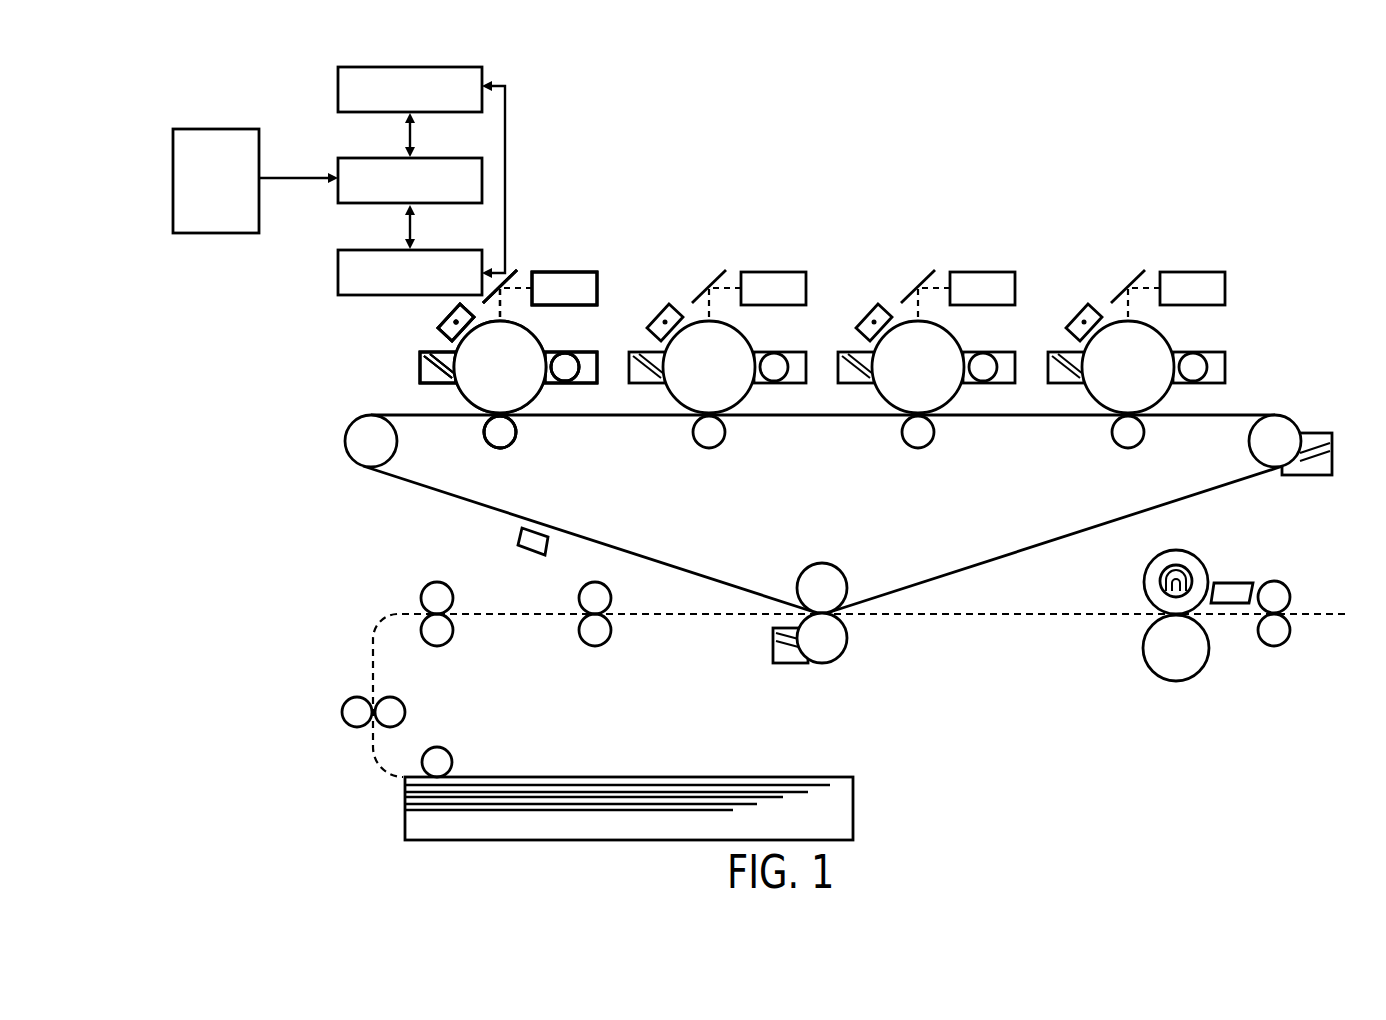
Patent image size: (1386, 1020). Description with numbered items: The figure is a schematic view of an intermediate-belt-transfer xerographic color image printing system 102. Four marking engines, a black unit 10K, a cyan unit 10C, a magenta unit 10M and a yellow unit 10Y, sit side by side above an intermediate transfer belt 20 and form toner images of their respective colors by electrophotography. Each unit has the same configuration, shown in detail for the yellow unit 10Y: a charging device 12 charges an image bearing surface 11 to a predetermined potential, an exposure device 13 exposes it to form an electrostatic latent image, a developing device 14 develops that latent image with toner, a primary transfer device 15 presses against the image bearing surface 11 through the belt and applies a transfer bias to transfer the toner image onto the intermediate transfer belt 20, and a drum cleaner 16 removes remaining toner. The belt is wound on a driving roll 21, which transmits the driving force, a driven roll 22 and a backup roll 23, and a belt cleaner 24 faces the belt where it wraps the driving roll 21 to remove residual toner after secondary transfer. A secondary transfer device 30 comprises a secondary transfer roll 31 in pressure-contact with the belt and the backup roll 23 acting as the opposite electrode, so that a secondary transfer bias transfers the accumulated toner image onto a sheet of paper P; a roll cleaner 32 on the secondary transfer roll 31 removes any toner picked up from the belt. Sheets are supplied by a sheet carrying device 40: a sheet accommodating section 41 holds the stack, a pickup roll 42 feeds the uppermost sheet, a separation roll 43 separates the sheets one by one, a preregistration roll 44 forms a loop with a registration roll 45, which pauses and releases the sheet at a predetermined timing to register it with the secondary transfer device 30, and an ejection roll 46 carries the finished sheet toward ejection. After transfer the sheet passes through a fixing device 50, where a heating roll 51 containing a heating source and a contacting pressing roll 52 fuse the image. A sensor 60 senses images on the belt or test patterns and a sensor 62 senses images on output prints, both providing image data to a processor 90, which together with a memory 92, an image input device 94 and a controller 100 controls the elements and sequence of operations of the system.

The black unit 10K is at (556, 244).
The cyan unit 10C is at (763, 244).
The magenta unit 10M is at (973, 244).
The yellow unit 10Y is at (1153, 343).
The image printing system 102 is at (922, 149).
The image bearing surface 11 is at (1170, 386).
The charging device 12 is at (1080, 304).
The exposure device 13 is at (1224, 290).
The developing device 14 is at (1224, 370).
The primary transfer device 15 is at (1128, 440).
The drum cleaner 16 is at (1062, 377).
The intermediate transfer belt 20 is at (402, 415).
The driving roll 21 is at (1262, 441).
The driven roll 22 is at (360, 438).
The backup roll 23 is at (821, 578).
The belt cleaner 24 is at (1322, 477).
The secondary transfer device 30 is at (856, 622).
The secondary transfer roll 31 is at (822, 650).
The roll cleaner 32 is at (773, 656).
The sheet carrying device 40 is at (644, 778).
The sheet accommodating section 41 is at (405, 808).
The pickup roll 42 is at (440, 754).
The separation roll 43 is at (352, 713).
The preregistration roll 44 is at (437, 590).
The registration roll 45 is at (595, 642).
The ejection roll 46 is at (1274, 644).
The fixing device 50 is at (1167, 585).
The heating roll 51 is at (1150, 586).
The pressing roll 52 is at (1150, 653).
The sensor 60 is at (525, 548).
The sensor 62 is at (1243, 582).
The processor 90 is at (338, 168).
The memory 92 is at (338, 91).
The image input device 94 is at (215, 233).
The controller 100 is at (338, 270).
The sheet of paper P is at (640, 777).